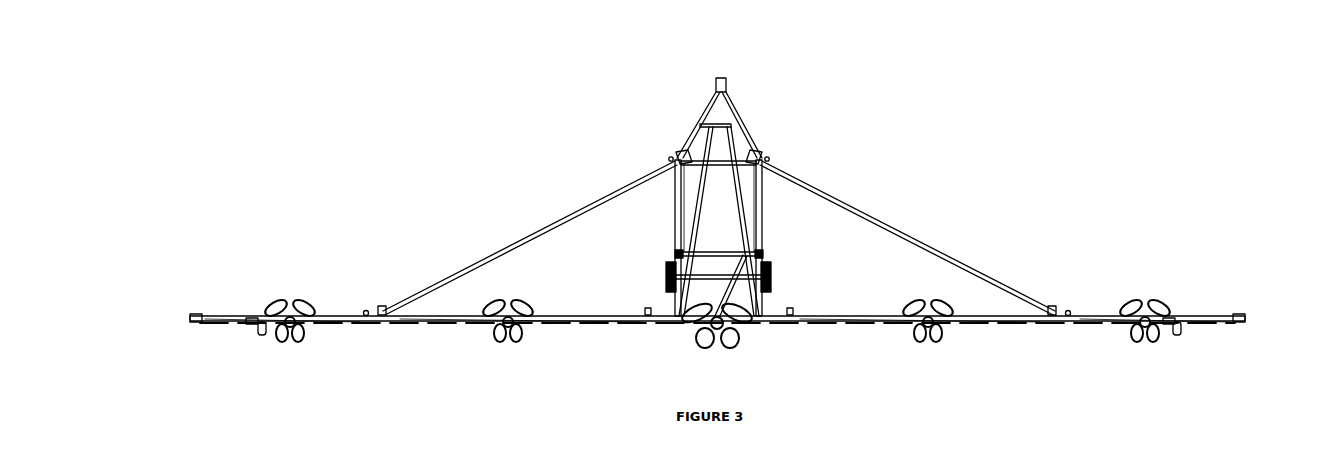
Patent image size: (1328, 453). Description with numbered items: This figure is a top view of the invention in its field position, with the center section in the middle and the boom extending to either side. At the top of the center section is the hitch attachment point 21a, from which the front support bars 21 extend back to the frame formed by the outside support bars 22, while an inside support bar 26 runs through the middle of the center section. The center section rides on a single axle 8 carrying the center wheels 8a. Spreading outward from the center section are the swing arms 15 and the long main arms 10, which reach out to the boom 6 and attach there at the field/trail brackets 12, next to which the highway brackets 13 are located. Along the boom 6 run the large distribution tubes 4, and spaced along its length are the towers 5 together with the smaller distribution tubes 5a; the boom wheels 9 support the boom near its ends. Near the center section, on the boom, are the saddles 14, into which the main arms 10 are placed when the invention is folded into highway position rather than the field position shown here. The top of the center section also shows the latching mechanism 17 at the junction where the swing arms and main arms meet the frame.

The large distribution tubes 4 is at (717, 243).
The towers 5 is at (716, 348).
The smaller distribution tubes 5a is at (1179, 282).
The boom 6 is at (725, 290).
The single axle 8 is at (742, 274).
The center wheels 8a is at (719, 263).
The boom wheels 9 is at (705, 343).
The main arms 10 is at (719, 238).
The field/trail brackets 12 is at (715, 253).
The highway brackets 13 is at (713, 270).
The saddles 14 is at (719, 287).
The swing arms 15 is at (726, 231).
The latching mechanism 17 is at (718, 143).
The front support bars 21 is at (714, 105).
The hitch attachment point 21a is at (749, 65).
The outside support bars 22 is at (718, 208).
The inside support bar 26 is at (719, 244).